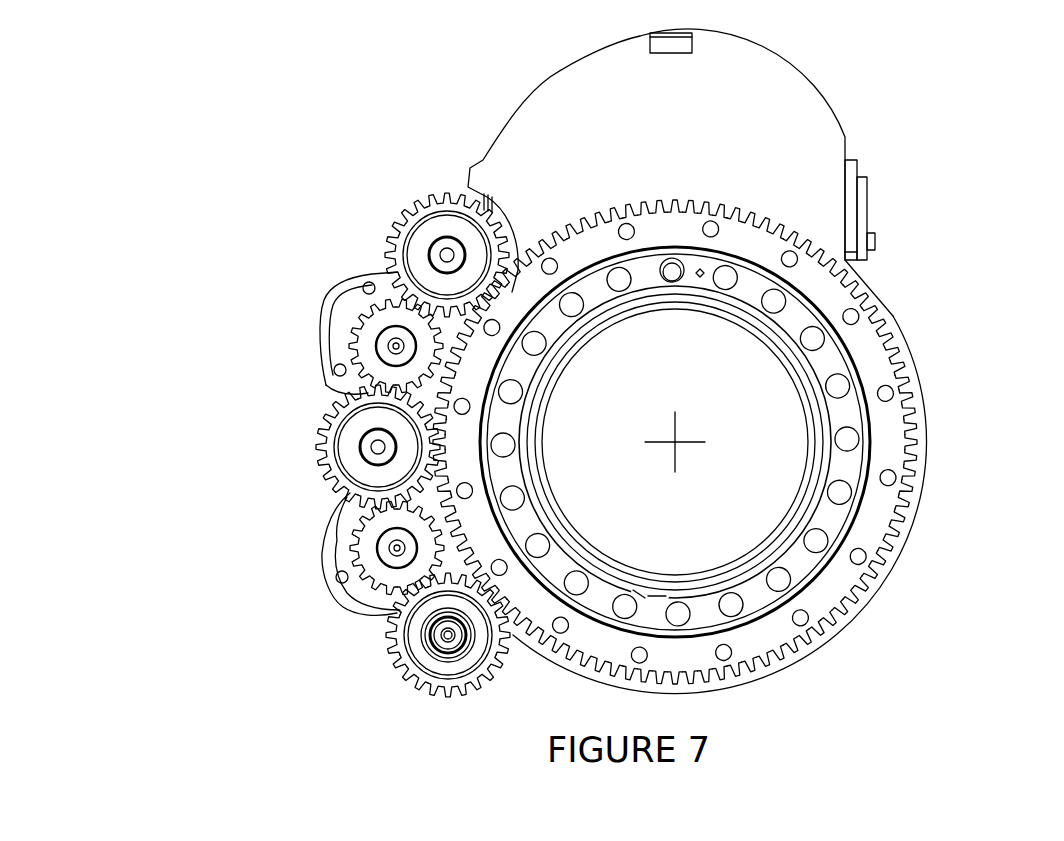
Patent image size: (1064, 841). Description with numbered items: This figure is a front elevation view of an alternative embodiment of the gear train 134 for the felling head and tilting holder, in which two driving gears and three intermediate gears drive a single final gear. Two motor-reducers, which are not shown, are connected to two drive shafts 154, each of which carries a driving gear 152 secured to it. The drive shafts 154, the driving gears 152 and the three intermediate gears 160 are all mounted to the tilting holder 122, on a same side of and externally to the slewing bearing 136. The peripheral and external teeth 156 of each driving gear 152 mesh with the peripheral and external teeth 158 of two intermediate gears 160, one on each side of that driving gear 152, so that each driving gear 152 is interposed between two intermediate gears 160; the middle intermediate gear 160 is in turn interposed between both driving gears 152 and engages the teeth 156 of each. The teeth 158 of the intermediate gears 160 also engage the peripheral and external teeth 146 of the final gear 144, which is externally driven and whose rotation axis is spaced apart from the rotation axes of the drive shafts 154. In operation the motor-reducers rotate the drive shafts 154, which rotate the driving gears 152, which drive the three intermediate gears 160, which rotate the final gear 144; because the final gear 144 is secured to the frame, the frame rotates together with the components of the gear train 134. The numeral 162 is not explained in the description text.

The tilting holder 122 is at (823, 112).
The gear train 134 is at (256, 440).
The slewing bearing 136 is at (713, 442).
The final gear 144 is at (890, 408).
The peripheral and external teeth of the final gear 146 is at (912, 418).
The driving gear 152 is at (373, 326).
The drive shaft 154 is at (380, 344).
The peripheral and external teeth of the driving gear 156 is at (340, 335).
The peripheral and external teeth of the intermediate gear 158 is at (382, 243).
The intermediate gear 160 is at (414, 222).
The rotation axis 162 is at (683, 436).